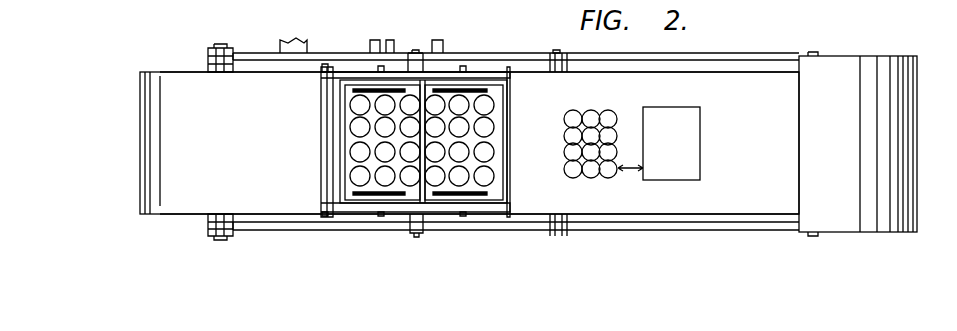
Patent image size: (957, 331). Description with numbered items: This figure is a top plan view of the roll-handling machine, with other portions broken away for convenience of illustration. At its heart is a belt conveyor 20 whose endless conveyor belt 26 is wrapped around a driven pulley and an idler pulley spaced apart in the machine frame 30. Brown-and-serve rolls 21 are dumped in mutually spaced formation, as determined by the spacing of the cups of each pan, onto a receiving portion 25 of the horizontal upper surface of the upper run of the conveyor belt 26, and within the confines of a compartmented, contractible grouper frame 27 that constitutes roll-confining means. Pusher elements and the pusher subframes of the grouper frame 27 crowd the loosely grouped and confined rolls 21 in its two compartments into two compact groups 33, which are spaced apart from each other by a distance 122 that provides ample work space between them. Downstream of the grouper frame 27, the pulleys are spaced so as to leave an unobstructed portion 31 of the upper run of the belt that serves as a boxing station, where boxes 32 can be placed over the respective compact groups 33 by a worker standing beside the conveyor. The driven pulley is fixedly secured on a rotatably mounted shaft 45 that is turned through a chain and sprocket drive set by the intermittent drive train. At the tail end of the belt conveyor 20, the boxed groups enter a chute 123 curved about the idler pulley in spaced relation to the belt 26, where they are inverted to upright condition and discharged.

The belt conveyor 20 is at (124, 108).
The rolls 21 is at (346, 146).
The receiving portion 25 is at (352, 163).
The conveyor belt 26 is at (177, 143).
The grouper frame 27 is at (503, 92).
The machine frame 30 is at (735, 57).
The unobstructed portion 31 is at (740, 98).
The boxes 32 is at (665, 117).
The compact groups 33 is at (591, 115).
The shaft 45 is at (214, 46).
The distance 122 is at (628, 170).
The chute 123 is at (898, 138).